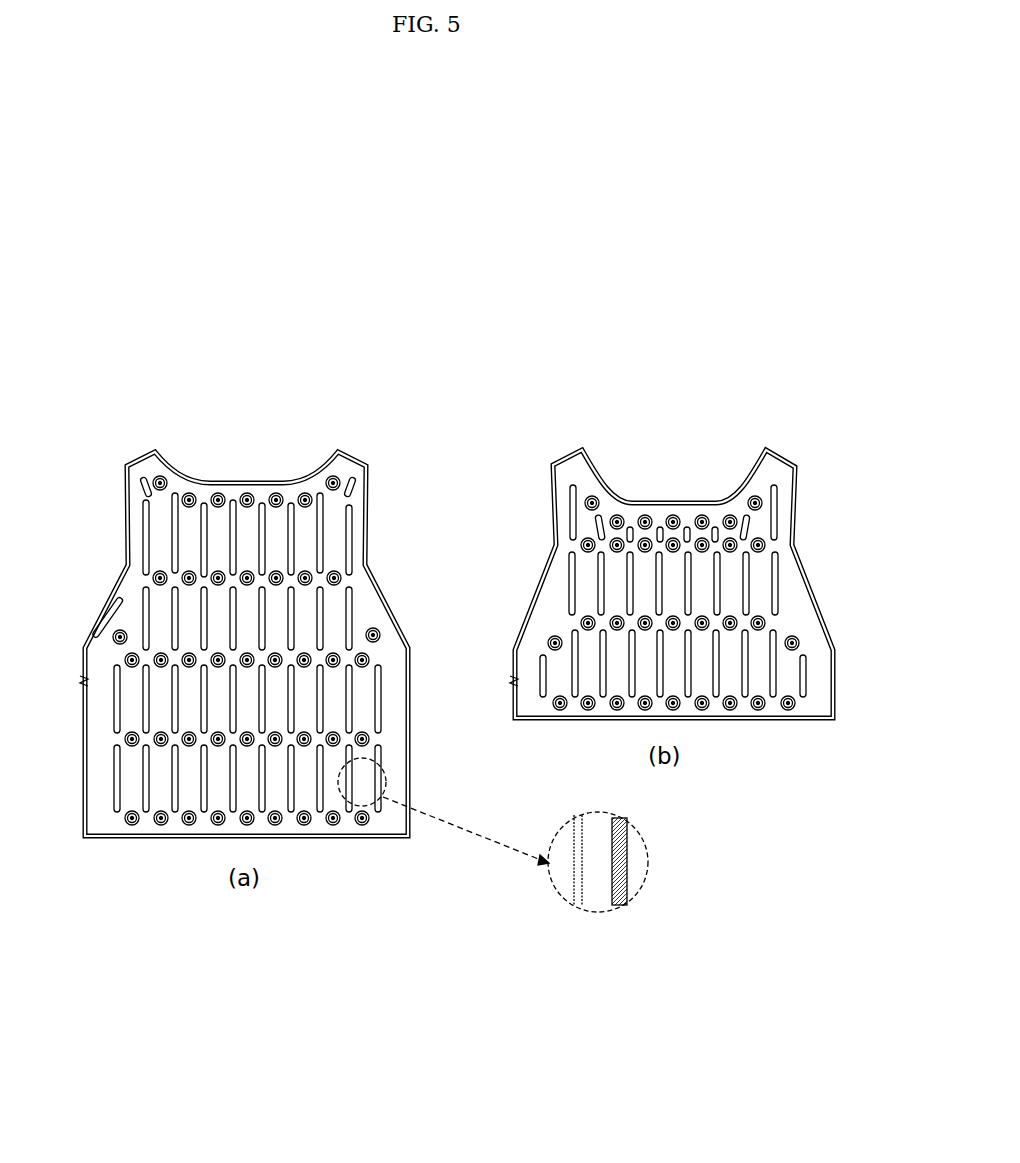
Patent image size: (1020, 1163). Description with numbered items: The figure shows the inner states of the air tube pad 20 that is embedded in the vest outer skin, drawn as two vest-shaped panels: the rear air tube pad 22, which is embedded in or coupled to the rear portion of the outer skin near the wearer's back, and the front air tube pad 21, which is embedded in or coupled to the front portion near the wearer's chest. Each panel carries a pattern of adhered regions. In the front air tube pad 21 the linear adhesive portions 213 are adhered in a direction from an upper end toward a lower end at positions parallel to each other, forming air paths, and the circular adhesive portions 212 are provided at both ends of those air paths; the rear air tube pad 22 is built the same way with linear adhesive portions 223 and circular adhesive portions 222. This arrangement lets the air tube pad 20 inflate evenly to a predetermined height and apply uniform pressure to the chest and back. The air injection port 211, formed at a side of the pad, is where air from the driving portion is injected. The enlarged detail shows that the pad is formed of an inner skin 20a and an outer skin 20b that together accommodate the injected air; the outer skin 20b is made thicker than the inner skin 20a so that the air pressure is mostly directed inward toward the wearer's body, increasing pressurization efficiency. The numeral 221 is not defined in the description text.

The air tube pad 20 is at (363, 430).
The rear air tube pad 22 is at (380, 544).
The front air tube pad 21 is at (545, 545).
The front panel base sheet 221 is at (81, 680).
The circular adhesive portion 222 is at (120, 632).
The linear adhesive portion 223 is at (149, 540).
The air injection port 211 is at (514, 681).
The circular adhesive portion 212 is at (766, 621).
The linear adhesive portion 213 is at (774, 510).
The inner skin 20a is at (574, 852).
The outer skin 20b is at (623, 855).